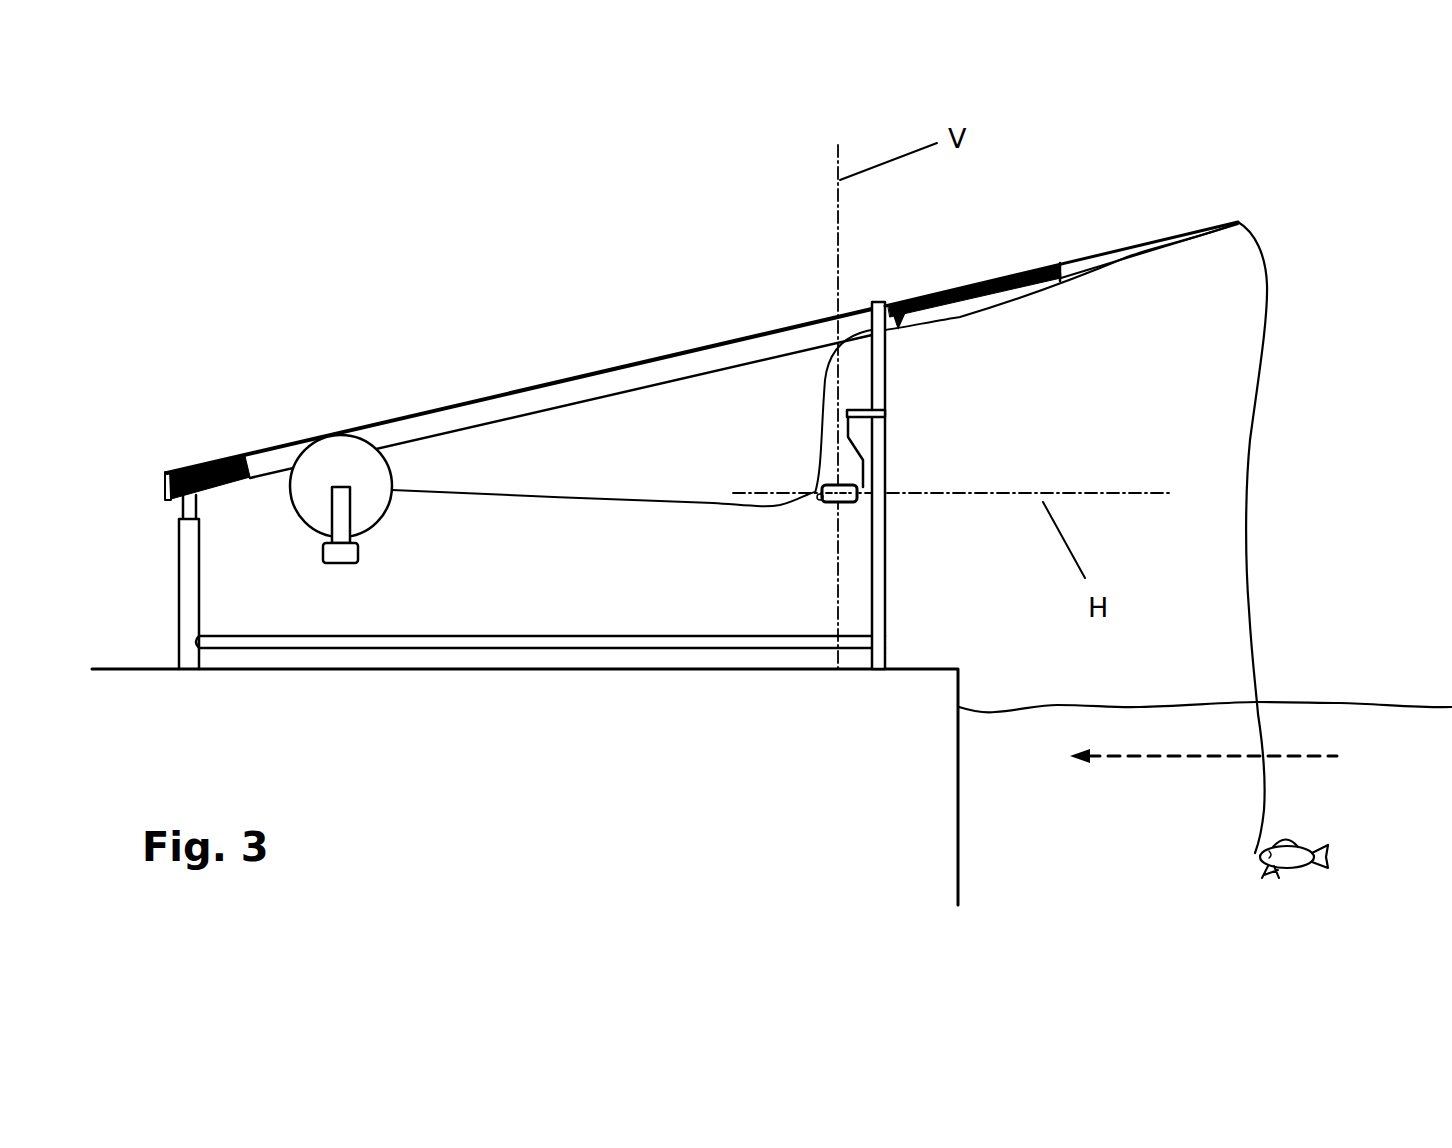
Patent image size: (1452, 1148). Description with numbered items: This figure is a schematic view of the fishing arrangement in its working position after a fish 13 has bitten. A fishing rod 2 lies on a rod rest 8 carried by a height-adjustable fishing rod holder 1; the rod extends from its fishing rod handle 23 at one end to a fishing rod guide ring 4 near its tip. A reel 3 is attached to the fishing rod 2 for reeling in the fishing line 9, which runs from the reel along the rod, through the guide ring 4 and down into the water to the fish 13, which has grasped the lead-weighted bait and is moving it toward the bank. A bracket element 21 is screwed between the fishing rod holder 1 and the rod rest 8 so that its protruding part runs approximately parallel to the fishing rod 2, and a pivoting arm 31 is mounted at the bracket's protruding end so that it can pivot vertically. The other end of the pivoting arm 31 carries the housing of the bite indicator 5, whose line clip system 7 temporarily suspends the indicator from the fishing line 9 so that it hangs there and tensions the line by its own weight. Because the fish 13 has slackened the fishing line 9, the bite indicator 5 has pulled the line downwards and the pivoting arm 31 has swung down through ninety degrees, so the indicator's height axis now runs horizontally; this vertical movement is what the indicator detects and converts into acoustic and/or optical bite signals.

The fishing rod holder 1 is at (560, 646).
The fishing rod 2 is at (462, 408).
The reel 3 is at (376, 527).
The fishing rod guide ring 4 is at (905, 313).
The bite indicator 5 is at (822, 505).
The line clip system 7 is at (815, 490).
The rod rest 8 is at (878, 362).
The fishing line 9 is at (562, 500).
The fish 13 is at (1303, 845).
The bracket element 21 is at (885, 413).
The fishing rod handle 23 is at (215, 466).
The pivoting arm 31 is at (867, 460).